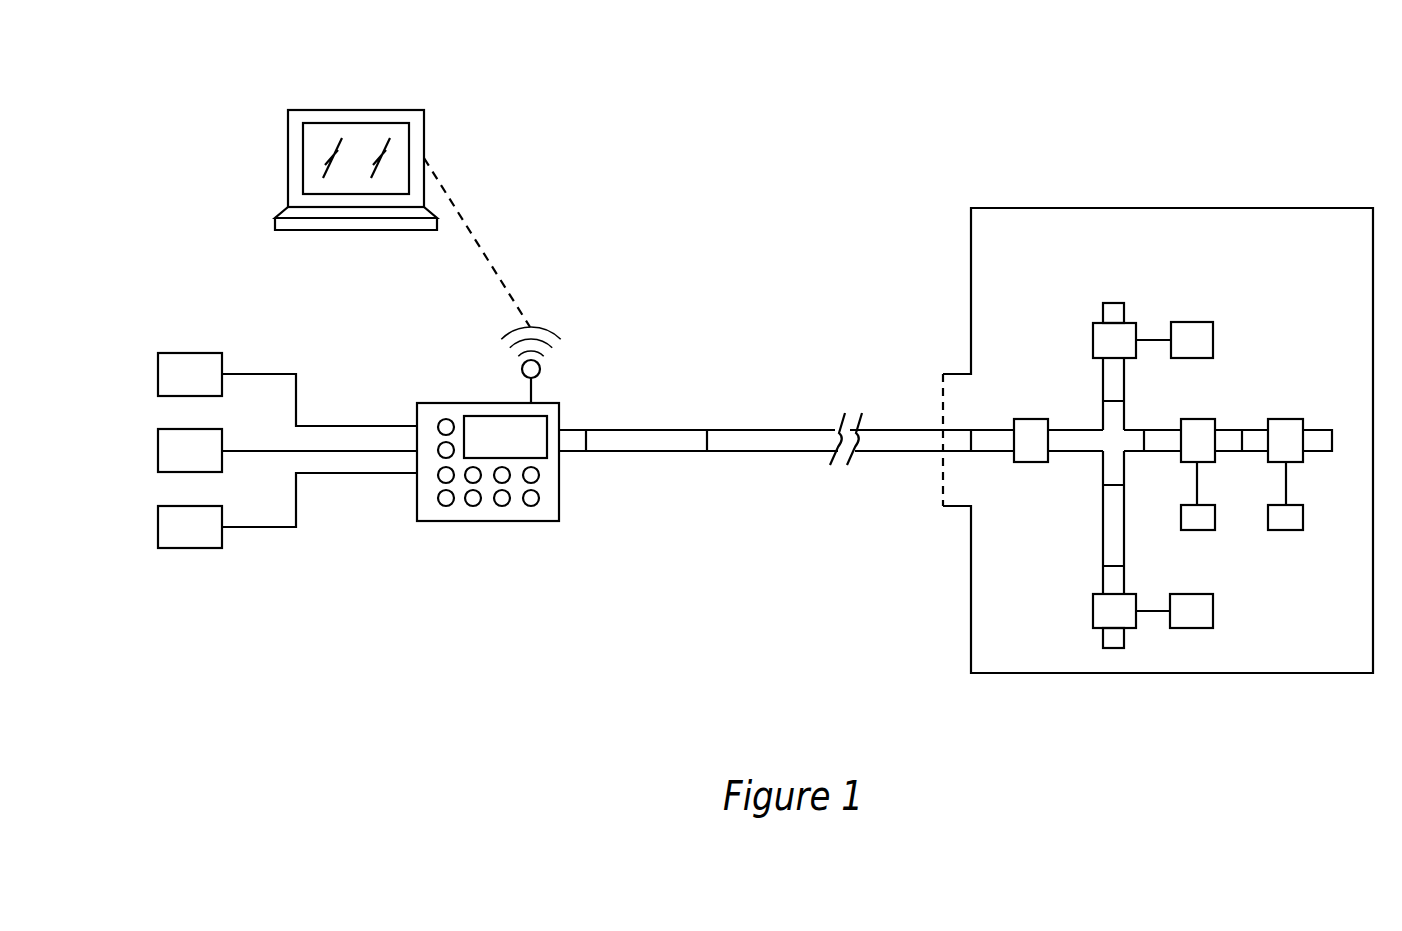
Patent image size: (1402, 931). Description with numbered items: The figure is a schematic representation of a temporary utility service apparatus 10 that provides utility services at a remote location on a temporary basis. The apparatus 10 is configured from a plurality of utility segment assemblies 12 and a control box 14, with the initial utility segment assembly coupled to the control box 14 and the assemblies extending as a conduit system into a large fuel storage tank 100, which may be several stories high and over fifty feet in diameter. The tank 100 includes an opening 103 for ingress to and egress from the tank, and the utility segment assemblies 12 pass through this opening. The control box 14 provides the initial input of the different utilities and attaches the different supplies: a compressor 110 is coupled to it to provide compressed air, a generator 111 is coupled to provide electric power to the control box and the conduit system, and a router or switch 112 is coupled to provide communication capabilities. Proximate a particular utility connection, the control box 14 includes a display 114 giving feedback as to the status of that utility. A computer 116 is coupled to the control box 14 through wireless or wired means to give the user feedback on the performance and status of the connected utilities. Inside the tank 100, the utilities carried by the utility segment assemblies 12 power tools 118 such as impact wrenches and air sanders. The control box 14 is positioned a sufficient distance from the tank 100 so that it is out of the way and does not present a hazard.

The temporary utility service apparatus 10 is at (735, 257).
The utility segment assemblies 12 is at (900, 415).
The control box 14 is at (489, 461).
The fuel storage tank 100 is at (1234, 180).
The opening 103 is at (931, 487).
The compressor 110 is at (188, 340).
The generator 111 is at (135, 451).
The router or switch 112 is at (192, 565).
The display 114 is at (492, 416).
The computer 116 is at (355, 100).
The tools 118 is at (1210, 541).